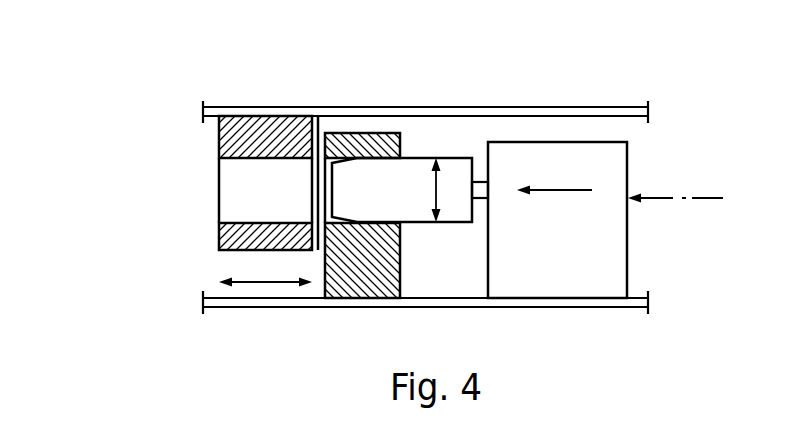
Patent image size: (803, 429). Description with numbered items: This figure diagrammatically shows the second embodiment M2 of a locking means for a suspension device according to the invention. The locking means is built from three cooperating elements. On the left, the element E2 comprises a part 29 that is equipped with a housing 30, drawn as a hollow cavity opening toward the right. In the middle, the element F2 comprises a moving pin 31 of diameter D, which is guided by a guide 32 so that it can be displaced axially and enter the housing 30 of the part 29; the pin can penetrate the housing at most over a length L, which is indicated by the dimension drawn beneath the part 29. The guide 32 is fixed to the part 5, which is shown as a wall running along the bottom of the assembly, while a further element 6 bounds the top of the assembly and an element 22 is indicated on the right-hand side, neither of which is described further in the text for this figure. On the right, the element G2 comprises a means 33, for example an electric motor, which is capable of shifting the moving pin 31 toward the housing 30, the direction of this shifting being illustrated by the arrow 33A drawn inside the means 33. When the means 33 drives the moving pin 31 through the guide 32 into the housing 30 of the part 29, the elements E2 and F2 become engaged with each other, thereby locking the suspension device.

The part 5 is at (615, 303).
The upper housing wall 6 is at (590, 108).
The fluid supply line 22 is at (672, 199).
The part 29 is at (220, 232).
The housing 30 is at (232, 193).
The moving pin 31 is at (405, 222).
The guide 32 is at (400, 285).
The means 33 is at (620, 257).
The arrow 33A is at (552, 190).
The diameter D is at (426, 190).
The length L is at (265, 270).
The second embodiment M2 is at (186, 66).
The element E2 is at (150, 148).
The element F2 is at (414, 121).
The element G2 is at (650, 156).